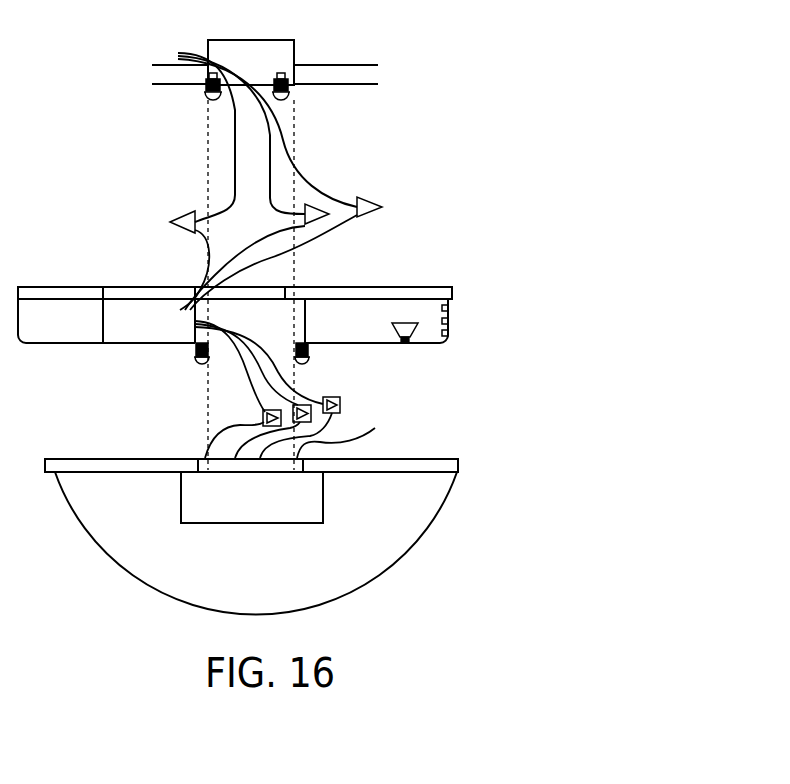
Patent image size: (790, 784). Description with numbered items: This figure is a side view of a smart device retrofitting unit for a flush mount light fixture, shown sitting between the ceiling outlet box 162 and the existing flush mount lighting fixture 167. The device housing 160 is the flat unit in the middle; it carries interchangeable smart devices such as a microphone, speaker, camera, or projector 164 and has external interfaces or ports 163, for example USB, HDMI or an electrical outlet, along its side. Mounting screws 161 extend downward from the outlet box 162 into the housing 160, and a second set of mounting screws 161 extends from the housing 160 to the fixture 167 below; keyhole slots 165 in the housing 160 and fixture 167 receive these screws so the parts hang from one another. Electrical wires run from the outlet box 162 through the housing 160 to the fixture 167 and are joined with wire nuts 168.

The device housing 160 is at (359, 323).
The mounting screw 161 is at (224, 100).
The outlet box 162 is at (303, 48).
The external interface and/or port 163 is at (453, 306).
The microphone, speaker, camera, or projector 164 is at (408, 319).
The keyhole slot 165 is at (284, 286).
The flush mount lighting fixture 167 is at (359, 519).
The wire nut 168 is at (184, 212).